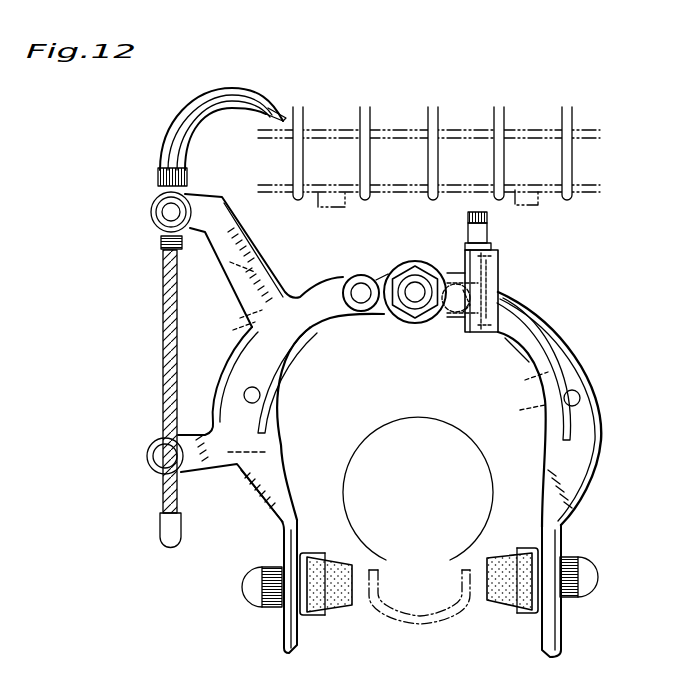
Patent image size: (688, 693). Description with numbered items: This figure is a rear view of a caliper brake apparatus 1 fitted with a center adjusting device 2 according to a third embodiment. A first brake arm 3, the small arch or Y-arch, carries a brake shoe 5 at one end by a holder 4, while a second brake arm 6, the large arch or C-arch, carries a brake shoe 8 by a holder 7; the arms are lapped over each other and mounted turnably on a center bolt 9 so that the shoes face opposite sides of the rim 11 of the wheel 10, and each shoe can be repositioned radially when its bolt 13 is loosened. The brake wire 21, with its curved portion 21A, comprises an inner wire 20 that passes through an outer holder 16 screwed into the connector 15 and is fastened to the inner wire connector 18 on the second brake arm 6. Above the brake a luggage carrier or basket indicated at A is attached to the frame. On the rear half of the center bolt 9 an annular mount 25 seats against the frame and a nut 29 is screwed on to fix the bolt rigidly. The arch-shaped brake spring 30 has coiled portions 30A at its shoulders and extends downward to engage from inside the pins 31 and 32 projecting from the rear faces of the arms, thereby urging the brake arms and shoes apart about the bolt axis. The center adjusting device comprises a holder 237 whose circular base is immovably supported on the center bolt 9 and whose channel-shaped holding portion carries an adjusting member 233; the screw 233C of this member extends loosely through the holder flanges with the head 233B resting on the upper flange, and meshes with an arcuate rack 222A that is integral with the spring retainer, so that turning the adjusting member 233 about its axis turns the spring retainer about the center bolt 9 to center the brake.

The caliper brake apparatus 1 is at (605, 318).
The center adjusting device 2 is at (508, 246).
The first brake arm 3 is at (244, 488).
The holder 4 is at (312, 616).
The brake shoe 5 is at (346, 607).
The second brake arm 6 is at (593, 460).
The holder 7 is at (521, 613).
The brake shoe 8 is at (494, 601).
The center bolt 9 is at (407, 304).
The wheel 10 is at (470, 437).
The rim 11 is at (447, 622).
The bolt 13 is at (244, 583).
The connector 15 is at (168, 213).
The outer holder 16 is at (158, 180).
The inner wire connector 18 is at (152, 458).
The inner wire 20 is at (188, 154).
The brake wire 21 is at (156, 148).
The curved portion 21A is at (224, 100).
The annular mount 25 is at (402, 268).
The nut 29 is at (415, 272).
The brake spring 30 is at (560, 370).
The coiled portions 30A is at (351, 282).
The pin 31 is at (245, 394).
The pin 32 is at (580, 398).
The arcuate rack 222A is at (451, 328).
The adjusting member 233 is at (502, 268).
The head 233B is at (471, 230).
The screw 233C is at (502, 285).
The holder 237 is at (445, 318).
The luggage carrier A is at (580, 170).